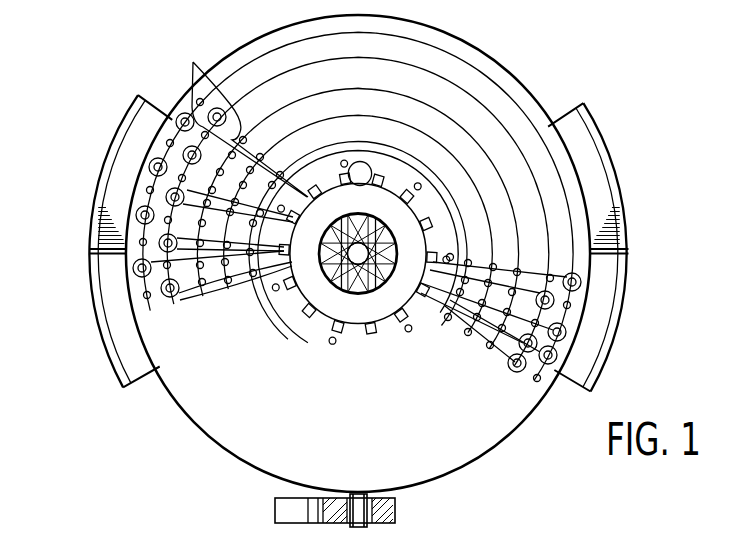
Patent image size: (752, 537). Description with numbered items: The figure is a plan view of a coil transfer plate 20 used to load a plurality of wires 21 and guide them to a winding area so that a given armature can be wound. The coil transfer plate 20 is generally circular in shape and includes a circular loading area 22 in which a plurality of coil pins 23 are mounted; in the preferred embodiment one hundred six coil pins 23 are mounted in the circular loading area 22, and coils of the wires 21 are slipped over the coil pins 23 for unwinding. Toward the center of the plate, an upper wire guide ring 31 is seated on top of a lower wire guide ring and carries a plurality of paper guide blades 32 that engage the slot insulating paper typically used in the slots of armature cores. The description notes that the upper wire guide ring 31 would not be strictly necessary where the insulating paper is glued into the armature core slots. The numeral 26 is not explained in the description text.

The coil transfer plate 20 is at (549, 50).
The wires 21 is at (359, 202).
The circular loading area 22 is at (226, 348).
The coil pins 23 is at (168, 288).
The hub 26 is at (360, 256).
The upper wire guide ring 31 is at (433, 212).
The paper guide blades 32 is at (373, 212).